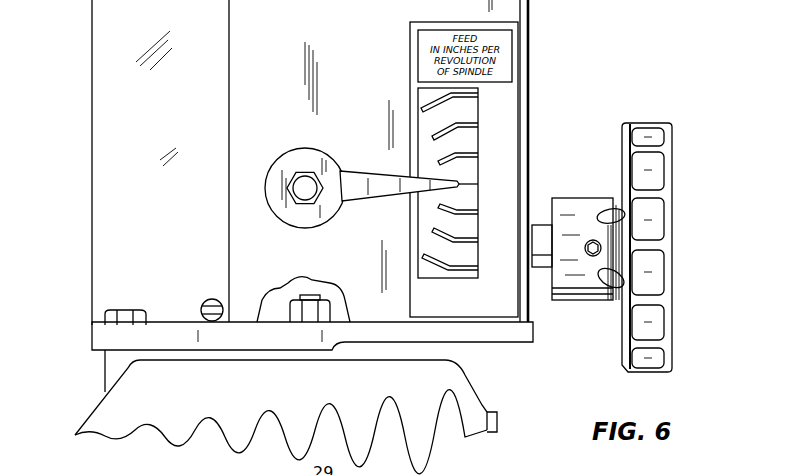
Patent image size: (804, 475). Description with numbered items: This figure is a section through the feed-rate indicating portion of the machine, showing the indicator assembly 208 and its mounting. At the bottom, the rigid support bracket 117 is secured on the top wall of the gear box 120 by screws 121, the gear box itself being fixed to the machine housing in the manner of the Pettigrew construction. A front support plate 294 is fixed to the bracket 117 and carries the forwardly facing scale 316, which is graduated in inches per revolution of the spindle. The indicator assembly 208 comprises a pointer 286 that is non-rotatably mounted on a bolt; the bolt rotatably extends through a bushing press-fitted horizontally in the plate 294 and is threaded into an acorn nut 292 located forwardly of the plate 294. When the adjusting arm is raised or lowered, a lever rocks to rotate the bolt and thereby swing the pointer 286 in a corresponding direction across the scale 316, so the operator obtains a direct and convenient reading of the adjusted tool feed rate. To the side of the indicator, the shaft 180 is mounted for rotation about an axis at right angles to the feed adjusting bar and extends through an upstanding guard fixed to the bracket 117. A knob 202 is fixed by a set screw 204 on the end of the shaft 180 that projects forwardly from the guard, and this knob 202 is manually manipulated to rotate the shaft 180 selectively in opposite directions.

The front support plate 294 is at (337, 62).
The scale 316 is at (420, 97).
The acorn nut 292 is at (307, 172).
The pointer 286 is at (386, 184).
The shaft 180 is at (546, 238).
The set screw 204 is at (594, 242).
The knob 202 is at (652, 125).
The screws 121 is at (108, 312).
The support bracket 117 is at (94, 340).
The gear box 120 is at (480, 383).
The indicator assembly 208 is at (362, 295).